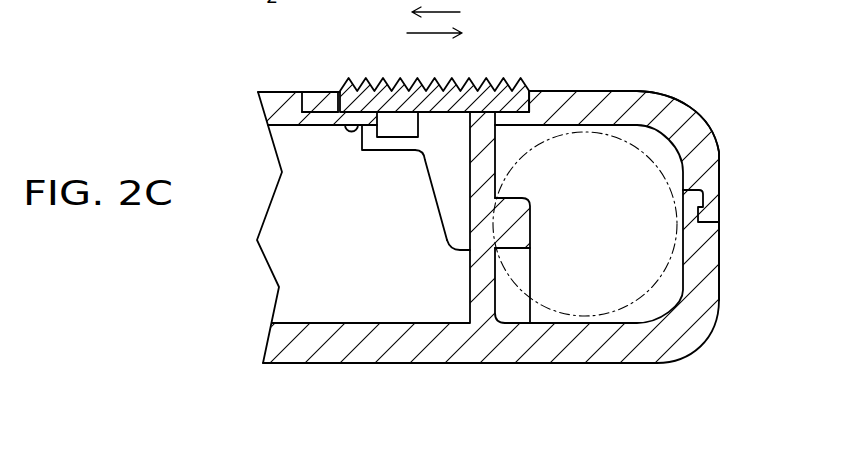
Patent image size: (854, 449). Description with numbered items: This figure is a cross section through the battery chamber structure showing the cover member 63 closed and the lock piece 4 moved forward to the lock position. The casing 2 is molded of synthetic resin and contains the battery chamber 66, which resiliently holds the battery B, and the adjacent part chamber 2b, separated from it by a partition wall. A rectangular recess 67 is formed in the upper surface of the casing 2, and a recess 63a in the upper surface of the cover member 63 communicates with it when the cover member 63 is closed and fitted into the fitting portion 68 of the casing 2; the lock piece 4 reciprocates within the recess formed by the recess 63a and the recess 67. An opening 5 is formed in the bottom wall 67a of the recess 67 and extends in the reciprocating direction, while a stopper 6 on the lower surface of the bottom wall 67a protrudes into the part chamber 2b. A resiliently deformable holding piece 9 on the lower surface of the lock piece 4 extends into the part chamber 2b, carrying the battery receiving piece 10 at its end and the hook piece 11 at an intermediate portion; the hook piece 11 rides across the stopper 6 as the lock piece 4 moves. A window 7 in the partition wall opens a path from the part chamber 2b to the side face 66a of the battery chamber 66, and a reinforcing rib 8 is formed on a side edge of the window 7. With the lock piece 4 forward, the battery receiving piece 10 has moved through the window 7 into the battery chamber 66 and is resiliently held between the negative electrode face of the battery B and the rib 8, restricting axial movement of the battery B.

The casing 2 is at (301, 385).
The part chamber 2b is at (257, 240).
The lock piece 4 is at (385, 77).
The opening 5 is at (420, 120).
The stopper 6 is at (348, 132).
The window 7 is at (470, 212).
The reinforcing rib 8 is at (513, 305).
The holding piece 9 is at (425, 165).
The battery receiving piece 10 is at (470, 252).
The hook piece 11 is at (362, 160).
The cover member 63 is at (699, 89).
The recess 63a is at (502, 108).
The battery chamber 66 is at (674, 303).
The side face 66a is at (523, 147).
The rectangular recess 67 is at (315, 97).
The bottom wall 67a is at (325, 110).
The fitting portion 68 is at (703, 198).
The battery B is at (660, 178).